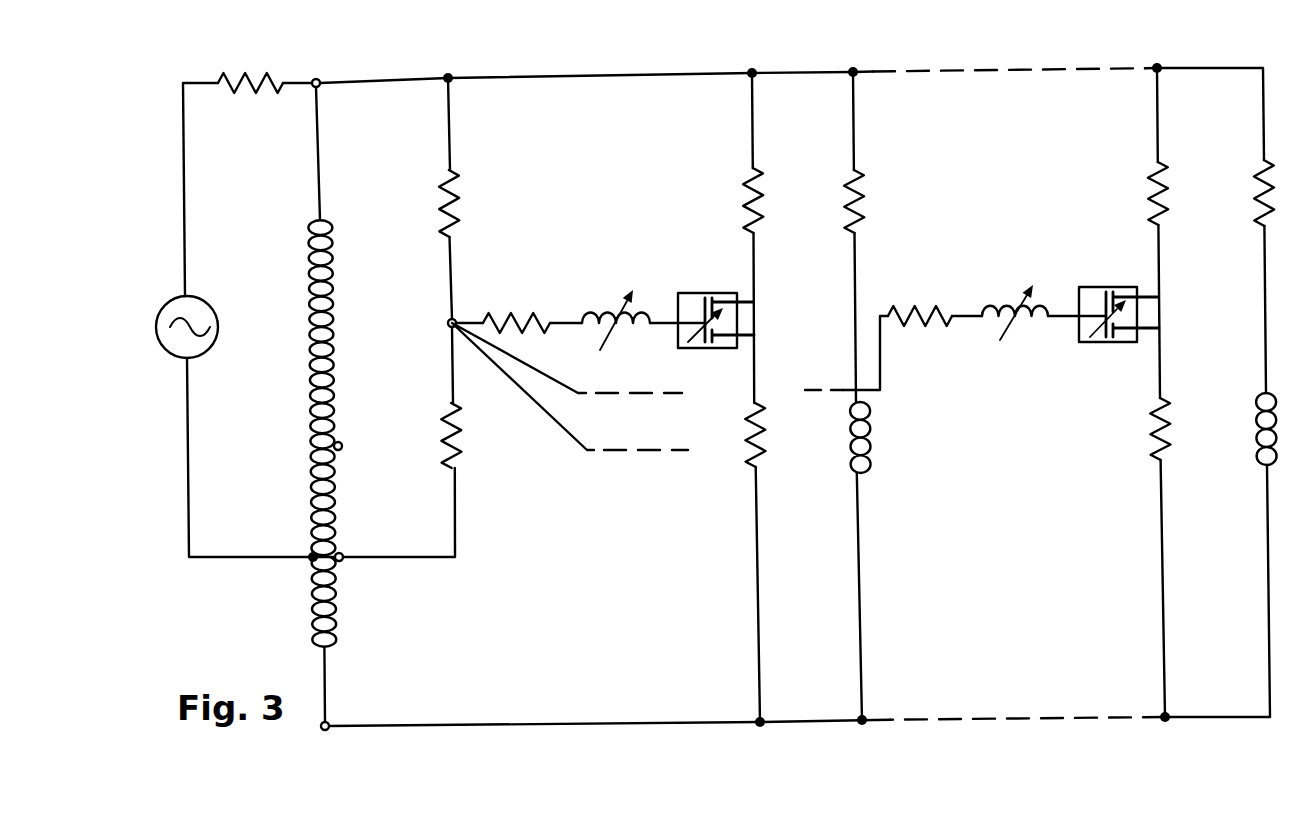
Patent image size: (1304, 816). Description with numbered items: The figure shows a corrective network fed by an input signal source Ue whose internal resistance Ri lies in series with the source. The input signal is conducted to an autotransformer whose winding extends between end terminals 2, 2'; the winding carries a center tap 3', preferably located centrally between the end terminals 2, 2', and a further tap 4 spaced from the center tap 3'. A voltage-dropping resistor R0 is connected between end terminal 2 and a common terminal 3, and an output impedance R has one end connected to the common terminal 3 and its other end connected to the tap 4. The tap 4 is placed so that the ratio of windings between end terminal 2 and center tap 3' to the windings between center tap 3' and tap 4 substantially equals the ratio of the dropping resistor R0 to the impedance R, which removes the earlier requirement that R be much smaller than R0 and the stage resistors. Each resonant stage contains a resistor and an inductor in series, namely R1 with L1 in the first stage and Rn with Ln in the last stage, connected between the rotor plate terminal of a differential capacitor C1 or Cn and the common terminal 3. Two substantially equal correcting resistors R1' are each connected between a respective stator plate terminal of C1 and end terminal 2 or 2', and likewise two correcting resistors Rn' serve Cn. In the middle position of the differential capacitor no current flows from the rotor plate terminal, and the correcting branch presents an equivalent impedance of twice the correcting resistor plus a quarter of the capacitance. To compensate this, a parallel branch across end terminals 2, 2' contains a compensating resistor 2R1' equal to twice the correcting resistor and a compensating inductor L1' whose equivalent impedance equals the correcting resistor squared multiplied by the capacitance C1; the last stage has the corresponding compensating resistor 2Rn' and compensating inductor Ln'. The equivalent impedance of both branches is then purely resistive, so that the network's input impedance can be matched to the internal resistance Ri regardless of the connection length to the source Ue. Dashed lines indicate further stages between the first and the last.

The end terminal 2 is at (333, 64).
The end terminal 2' is at (345, 747).
The common terminal 3 is at (429, 310).
The center tap 3' is at (356, 421).
The tap 4 is at (342, 560).
The internal resistance Ri is at (237, 91).
The input signal source Ue is at (232, 360).
The voltage-dropping resistor R0 is at (459, 186).
The output impedance R is at (462, 440).
The resistor R1 is at (516, 295).
The inductor L1 is at (616, 304).
The differential capacitor C1 is at (697, 304).
The correcting resistor R1' is at (781, 313).
The compensating resistor 2R1' is at (896, 196).
The compensating inductor L1' is at (941, 437).
The resistor Rn is at (920, 291).
The inductor Ln is at (1015, 298).
The differential capacitor Cn is at (1094, 299).
The correcting resistor Rn' is at (1129, 304).
The compensating resistor 2Rn' is at (1231, 187).
The compensating inductor Ln' is at (1230, 427).